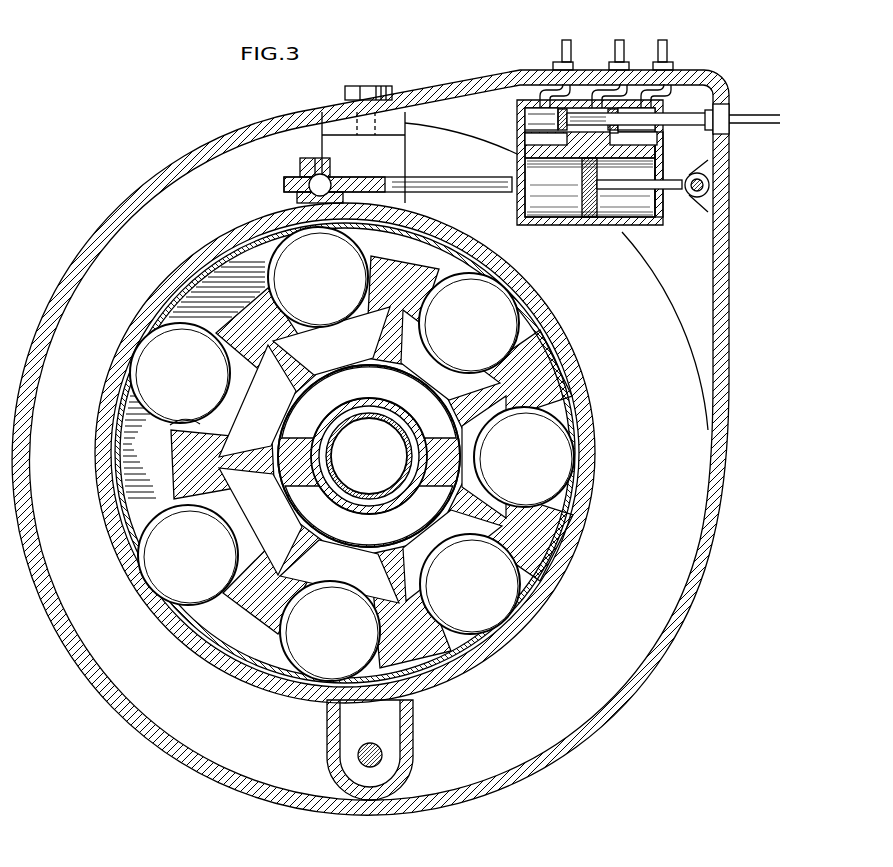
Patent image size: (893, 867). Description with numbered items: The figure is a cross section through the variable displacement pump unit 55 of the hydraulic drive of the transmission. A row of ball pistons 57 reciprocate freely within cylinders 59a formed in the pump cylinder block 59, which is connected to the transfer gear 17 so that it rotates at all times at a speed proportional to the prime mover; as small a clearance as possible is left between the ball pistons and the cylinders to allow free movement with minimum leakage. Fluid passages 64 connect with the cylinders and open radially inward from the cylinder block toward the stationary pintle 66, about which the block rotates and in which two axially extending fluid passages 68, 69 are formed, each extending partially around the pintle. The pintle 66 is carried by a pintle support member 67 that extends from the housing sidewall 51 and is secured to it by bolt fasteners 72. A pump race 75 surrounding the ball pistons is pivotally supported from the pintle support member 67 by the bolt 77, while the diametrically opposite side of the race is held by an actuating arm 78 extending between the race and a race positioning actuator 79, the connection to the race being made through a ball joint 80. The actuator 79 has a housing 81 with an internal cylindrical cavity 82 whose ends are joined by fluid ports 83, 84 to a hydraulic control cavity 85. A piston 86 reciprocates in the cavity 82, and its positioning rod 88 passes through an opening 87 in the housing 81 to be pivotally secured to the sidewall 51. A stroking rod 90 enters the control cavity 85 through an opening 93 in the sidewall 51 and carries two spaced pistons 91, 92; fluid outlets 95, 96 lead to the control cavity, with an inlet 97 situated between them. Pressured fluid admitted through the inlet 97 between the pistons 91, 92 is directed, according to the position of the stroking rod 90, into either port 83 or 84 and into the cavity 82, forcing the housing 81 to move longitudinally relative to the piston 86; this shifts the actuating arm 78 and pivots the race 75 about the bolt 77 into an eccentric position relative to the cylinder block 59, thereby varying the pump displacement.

The transfer gear 17 is at (378, 457).
The housing sidewall 51 is at (730, 376).
The variable displacement pump unit 55 is at (607, 378).
The ball pistons 57 is at (486, 350).
The pump cylinder block 59 is at (527, 367).
The cylinders 59a is at (178, 426).
The fluid passages 64 is at (280, 505).
The pintle 66 is at (462, 457).
The pintle support member 67 is at (405, 156).
The fluid passage 68 is at (385, 385).
The fluid passage 69 is at (385, 545).
The bolt fasteners 72 is at (376, 86).
The pump race 75 is at (592, 500).
The bolt 77 is at (375, 755).
The actuating arm 78 is at (475, 192).
The race positioning actuator 79 is at (629, 150).
The ball joint 80 is at (303, 181).
The housing 81 is at (660, 226).
The internal cylindrical cavity 82 is at (569, 200).
The fluid port 83 is at (647, 145).
The fluid port 84 is at (533, 144).
The hydraulic control cavity 85 is at (533, 119).
The piston 86 is at (584, 186).
The opening 87 is at (657, 192).
The positioning rod 88 is at (673, 189).
The stroking rod 90 is at (683, 118).
The piston 91 is at (563, 110).
The piston 92 is at (613, 110).
The opening 93 is at (731, 113).
The fluid outlet 95 is at (561, 43).
The fluid outlet 96 is at (668, 48).
The inlet 97 is at (619, 42).